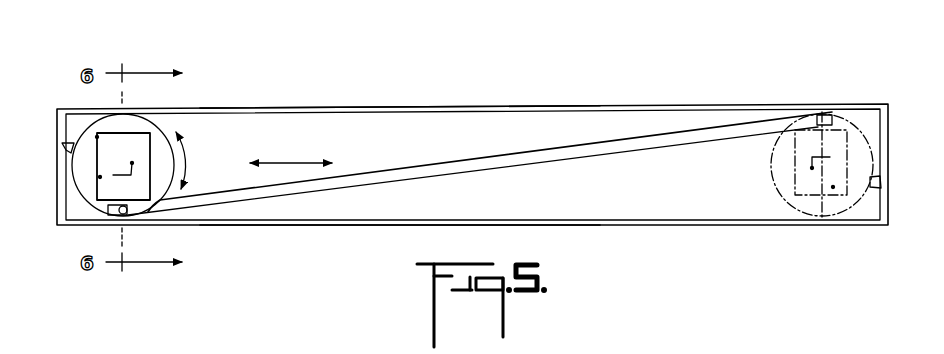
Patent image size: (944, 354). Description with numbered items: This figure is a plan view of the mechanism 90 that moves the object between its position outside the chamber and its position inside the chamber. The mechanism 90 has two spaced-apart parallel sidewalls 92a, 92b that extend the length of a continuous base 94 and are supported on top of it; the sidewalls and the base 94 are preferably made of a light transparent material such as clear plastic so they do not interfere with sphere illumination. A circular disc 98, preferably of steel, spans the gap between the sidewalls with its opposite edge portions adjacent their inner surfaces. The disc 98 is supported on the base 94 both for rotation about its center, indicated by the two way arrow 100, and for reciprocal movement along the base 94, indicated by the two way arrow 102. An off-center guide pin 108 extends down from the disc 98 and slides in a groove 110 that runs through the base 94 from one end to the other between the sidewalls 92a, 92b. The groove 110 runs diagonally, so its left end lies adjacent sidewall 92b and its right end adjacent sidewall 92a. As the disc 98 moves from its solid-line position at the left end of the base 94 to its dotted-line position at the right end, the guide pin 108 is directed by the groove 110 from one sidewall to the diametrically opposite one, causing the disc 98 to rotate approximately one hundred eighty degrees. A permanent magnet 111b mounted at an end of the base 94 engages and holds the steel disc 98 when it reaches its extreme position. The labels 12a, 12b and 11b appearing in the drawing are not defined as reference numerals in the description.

The mechanism 90 is at (467, 90).
The sidewall 92a is at (543, 107).
The sidewall 92b is at (545, 221).
The base 94 is at (690, 192).
The circular disc 98 is at (100, 177).
The two way arrow 100 is at (186, 160).
The two way arrow 102 is at (287, 163).
The off-center guide pin 108 is at (110, 212).
The groove 110 is at (475, 165).
The permanent magnet 111b is at (880, 186).
The pulley 12a is at (132, 163).
The pulley shaft 12b is at (97, 137).
The bracket 11b is at (66, 147).